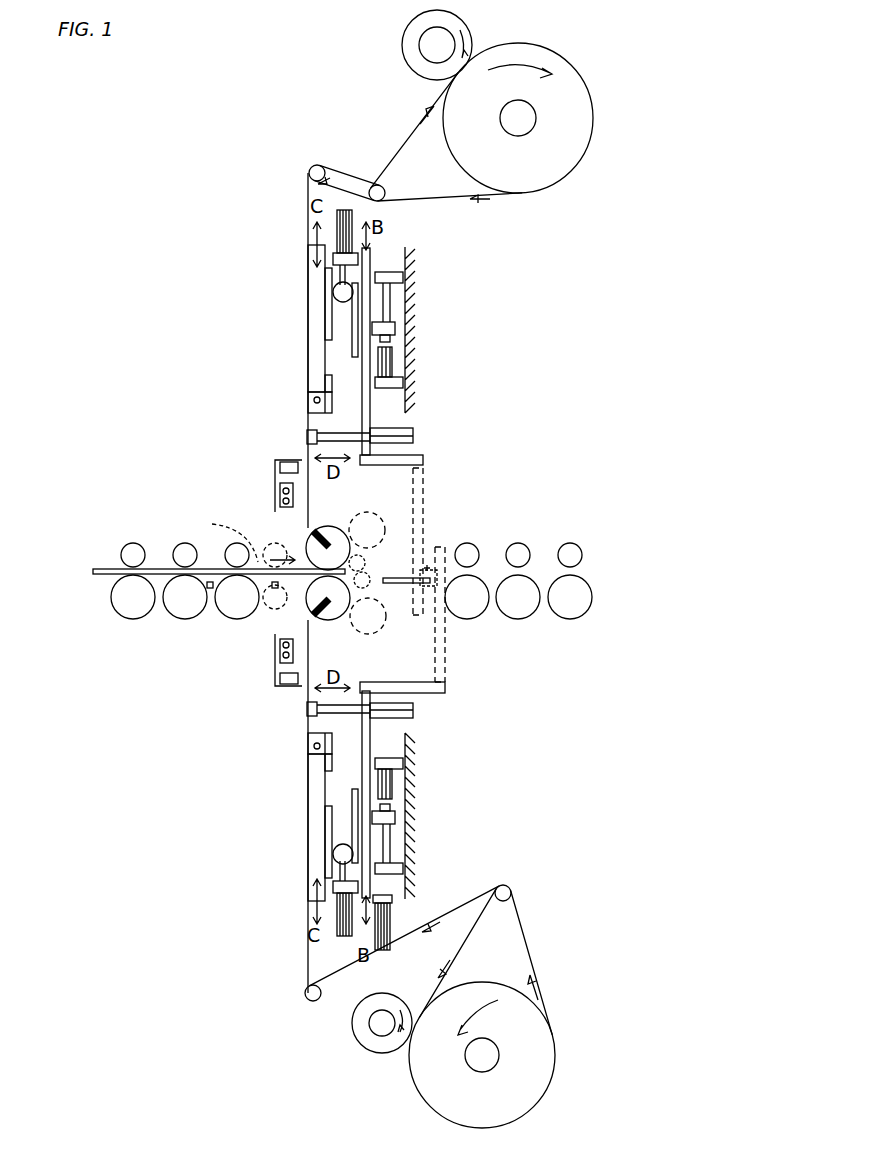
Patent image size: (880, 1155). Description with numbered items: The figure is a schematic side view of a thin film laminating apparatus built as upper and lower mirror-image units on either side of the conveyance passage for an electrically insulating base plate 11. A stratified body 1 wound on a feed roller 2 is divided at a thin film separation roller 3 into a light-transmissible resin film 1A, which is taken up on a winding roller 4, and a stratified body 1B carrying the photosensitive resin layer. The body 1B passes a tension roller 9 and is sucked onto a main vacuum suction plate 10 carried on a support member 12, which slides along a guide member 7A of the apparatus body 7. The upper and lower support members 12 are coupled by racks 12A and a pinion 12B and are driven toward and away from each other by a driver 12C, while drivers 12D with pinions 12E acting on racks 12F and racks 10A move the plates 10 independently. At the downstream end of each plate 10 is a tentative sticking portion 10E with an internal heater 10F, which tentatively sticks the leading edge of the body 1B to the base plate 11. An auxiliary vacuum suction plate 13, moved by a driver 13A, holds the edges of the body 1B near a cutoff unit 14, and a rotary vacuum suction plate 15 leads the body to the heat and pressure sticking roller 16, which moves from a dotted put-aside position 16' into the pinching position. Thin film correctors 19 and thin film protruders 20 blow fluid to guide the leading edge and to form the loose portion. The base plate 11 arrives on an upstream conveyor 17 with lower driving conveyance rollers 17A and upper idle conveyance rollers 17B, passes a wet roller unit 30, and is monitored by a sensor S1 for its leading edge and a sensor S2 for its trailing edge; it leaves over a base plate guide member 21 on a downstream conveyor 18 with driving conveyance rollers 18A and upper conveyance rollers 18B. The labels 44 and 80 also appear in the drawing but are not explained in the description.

The stratified body 1 is at (572, 75).
The light-transmissible resin film 1A is at (410, 38).
The stratified body 1B is at (345, 187).
The feed roller 2 is at (522, 122).
The thin film separation roller 3 is at (385, 190).
The winding roller 4 is at (425, 52).
The roller 44 is at (380, 1027).
The apparatus body 7 is at (410, 339).
The guide member 7A is at (384, 318).
The tension roller 9 is at (311, 170).
The main vacuum suction plate 10 is at (316, 300).
The rack 10A is at (327, 285).
The tentative sticking portion 10E is at (316, 405).
The heater 10F is at (328, 385).
The electrically insulating base plate 11 is at (103, 566).
The support member 12 is at (366, 400).
The rack 12A is at (426, 472).
The pinion 12B is at (428, 550).
The driver 12C is at (390, 922).
The driver 12D is at (340, 208).
The pinion 12E is at (340, 300).
The rack 12F is at (380, 312).
The auxiliary vacuum suction plate 13 is at (309, 433).
The driver 13A is at (398, 433).
The cutoff unit 14 is at (285, 465).
The rotary vacuum suction plate 15 is at (326, 530).
The heat and pressure sticking roller 16 is at (317, 591).
The put-aside position 16' is at (367, 510).
The upstream conveyor 17 is at (102, 607).
The lower driving conveyance roller 17A is at (187, 607).
The upper idle conveyance roller 17B is at (238, 550).
The downstream conveyor 18 is at (600, 562).
The driving conveyance roller 18A is at (570, 607).
The upper conveyance roller 18B is at (568, 548).
The thin film corrector 19 is at (276, 480).
The thin film protruder 20 is at (282, 497).
The base plate guide member 21 is at (403, 583).
The wet roller unit 30 is at (226, 534).
The guide rollers 80 is at (368, 564).
The sensor S1 is at (277, 591).
The sensor S2 is at (210, 590).